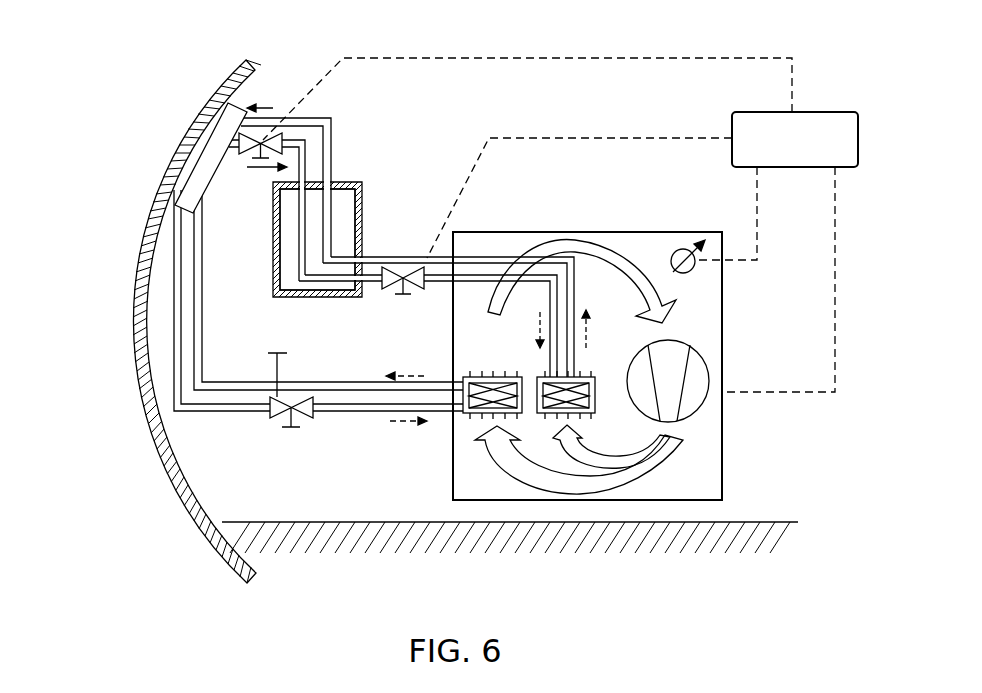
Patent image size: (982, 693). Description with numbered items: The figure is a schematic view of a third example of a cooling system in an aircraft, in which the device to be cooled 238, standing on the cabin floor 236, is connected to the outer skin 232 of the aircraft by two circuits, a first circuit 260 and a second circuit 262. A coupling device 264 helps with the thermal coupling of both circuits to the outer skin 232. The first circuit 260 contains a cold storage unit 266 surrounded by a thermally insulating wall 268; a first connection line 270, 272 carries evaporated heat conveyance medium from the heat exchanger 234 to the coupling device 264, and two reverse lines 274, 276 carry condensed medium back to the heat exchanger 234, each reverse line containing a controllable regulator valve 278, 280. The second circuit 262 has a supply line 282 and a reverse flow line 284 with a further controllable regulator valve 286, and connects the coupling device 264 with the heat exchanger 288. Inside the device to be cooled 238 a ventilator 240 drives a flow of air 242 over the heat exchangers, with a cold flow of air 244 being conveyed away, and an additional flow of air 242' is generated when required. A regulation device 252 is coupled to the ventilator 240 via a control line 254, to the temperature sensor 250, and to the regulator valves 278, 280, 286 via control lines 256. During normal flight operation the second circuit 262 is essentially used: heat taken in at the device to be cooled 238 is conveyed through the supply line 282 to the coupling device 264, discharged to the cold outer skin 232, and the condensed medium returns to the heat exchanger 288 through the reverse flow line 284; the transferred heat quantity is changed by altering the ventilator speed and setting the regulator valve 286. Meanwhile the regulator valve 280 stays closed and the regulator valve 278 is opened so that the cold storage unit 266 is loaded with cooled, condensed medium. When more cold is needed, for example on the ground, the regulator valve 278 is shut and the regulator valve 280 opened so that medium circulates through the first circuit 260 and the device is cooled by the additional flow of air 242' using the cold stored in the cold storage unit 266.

The outer skin 232 is at (146, 231).
The heat exchanger 234 is at (593, 372).
The cabin floor 236 is at (744, 522).
The device to be cooled 238 is at (723, 271).
The ventilator 240 is at (707, 353).
The flow of air 242 is at (579, 514).
The additional flow of air 242' is at (616, 516).
The cold flow of air 244 is at (583, 239).
The temperature sensor 250 is at (682, 248).
The regulation device 252 is at (807, 112).
The control line 254 is at (795, 397).
The control lines 256 is at (600, 54).
The first circuit 260 is at (338, 171).
The second circuit 262 is at (318, 344).
The coupling device 264 is at (208, 156).
The cold storage unit 266 is at (346, 240).
The thermally insulating wall 268 is at (353, 238).
The first connection line 270 is at (334, 121).
The first connection line 272 is at (508, 257).
The reverse line 274 is at (308, 143).
The reverse line 276 is at (462, 275).
The regulator valve 278 is at (268, 132).
The regulator valve 280 is at (416, 292).
The supply line 282 is at (323, 381).
The reverse flow line 284 is at (369, 412).
The regulator valve 286 is at (316, 424).
The heat exchanger 288 is at (471, 372).